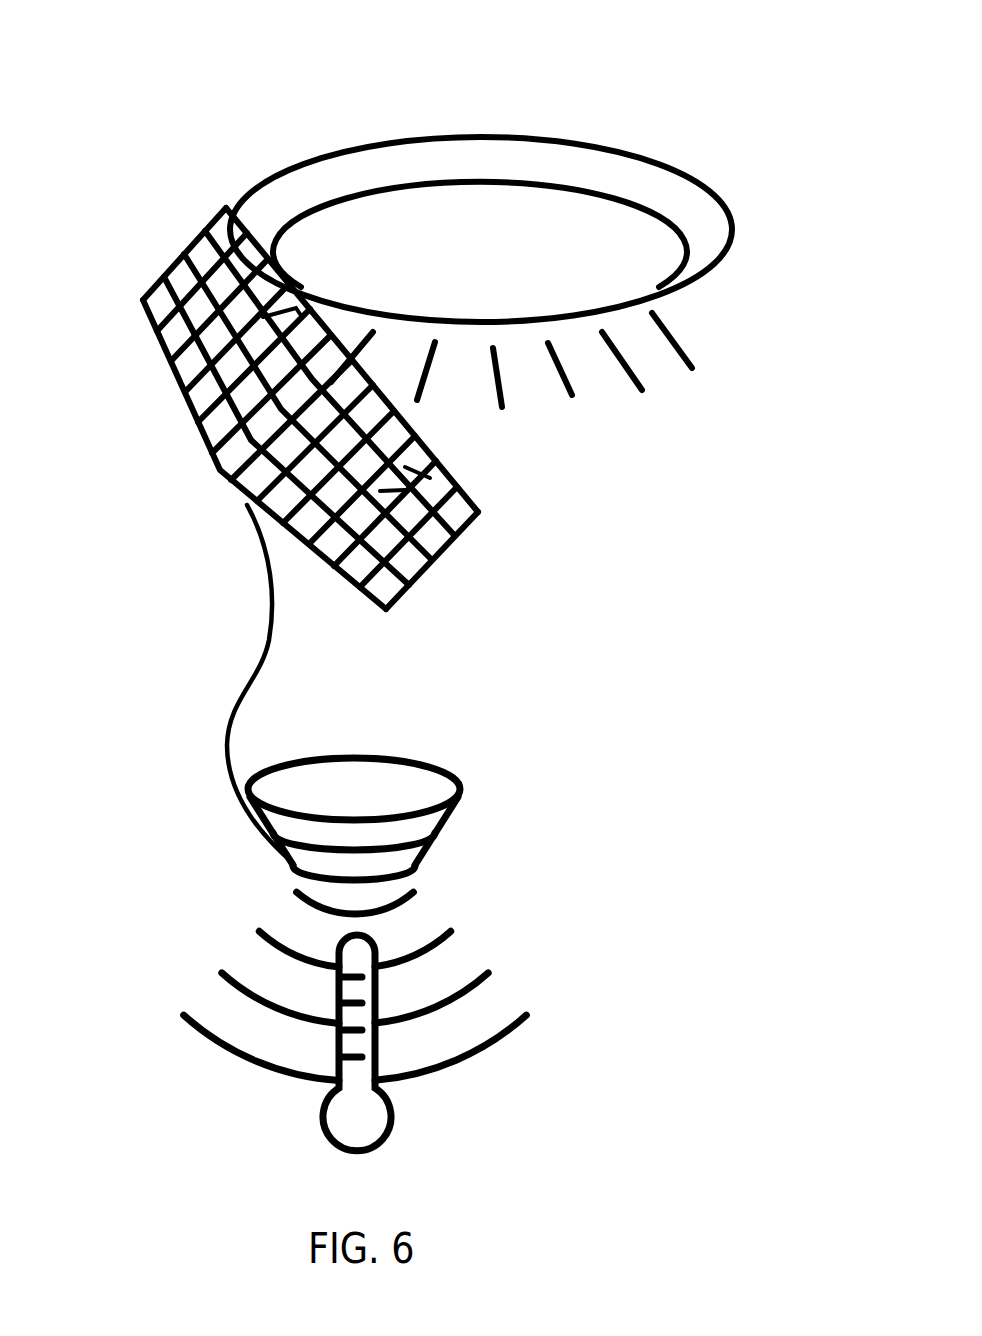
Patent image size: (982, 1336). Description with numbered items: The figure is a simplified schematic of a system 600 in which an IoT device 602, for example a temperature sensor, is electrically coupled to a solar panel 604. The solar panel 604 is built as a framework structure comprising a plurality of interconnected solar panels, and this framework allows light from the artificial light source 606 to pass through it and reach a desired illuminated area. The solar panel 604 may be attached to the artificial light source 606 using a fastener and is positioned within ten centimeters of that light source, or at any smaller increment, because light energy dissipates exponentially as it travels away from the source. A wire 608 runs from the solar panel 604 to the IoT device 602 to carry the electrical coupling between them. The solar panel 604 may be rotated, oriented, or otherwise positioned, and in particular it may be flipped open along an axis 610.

The system 600 is at (592, 37).
The IoT device 602 is at (330, 752).
The solar panel 604 is at (168, 350).
The artificial light source 606 is at (342, 150).
The wire 608 is at (267, 623).
The axis 610 is at (219, 478).